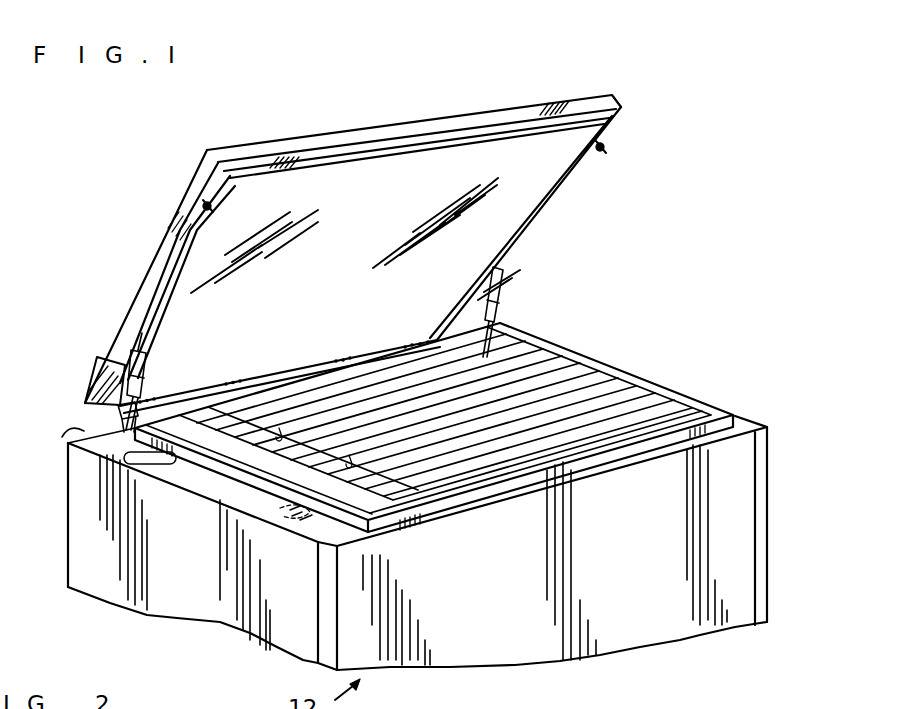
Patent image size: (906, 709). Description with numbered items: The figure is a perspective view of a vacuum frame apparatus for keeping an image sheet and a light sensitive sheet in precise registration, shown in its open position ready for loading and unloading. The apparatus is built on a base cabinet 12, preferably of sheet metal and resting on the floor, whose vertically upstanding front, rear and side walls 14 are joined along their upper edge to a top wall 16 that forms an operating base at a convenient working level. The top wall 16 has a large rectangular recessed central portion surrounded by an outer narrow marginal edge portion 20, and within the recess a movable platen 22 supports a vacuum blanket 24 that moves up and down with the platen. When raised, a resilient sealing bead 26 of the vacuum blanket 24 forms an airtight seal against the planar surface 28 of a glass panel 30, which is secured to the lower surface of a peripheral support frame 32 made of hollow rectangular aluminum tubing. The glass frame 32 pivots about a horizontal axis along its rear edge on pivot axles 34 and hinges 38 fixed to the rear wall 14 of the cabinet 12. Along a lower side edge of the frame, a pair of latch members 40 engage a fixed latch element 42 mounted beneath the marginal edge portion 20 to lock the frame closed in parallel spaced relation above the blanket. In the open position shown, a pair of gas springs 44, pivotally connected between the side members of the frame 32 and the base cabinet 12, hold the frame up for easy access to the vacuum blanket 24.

The base cabinet 12 is at (210, 596).
The front, rear and side walls 14 is at (210, 568).
The top wall 16 is at (95, 437).
The outer narrow marginal edge portion 20 is at (232, 500).
The movable platen 22 is at (712, 404).
The vacuum blanket 24 is at (318, 506).
The resilient sealing bead 26 is at (242, 450).
The planar surface 28 is at (343, 283).
The glass panel 30 is at (517, 193).
The peripheral support frame 32 is at (178, 212).
The pivot axles 34 is at (118, 410).
The hinges 38 is at (150, 400).
The latch members 40 is at (210, 206).
The fixed latch element 42 is at (290, 510).
The gas springs 44 is at (500, 300).